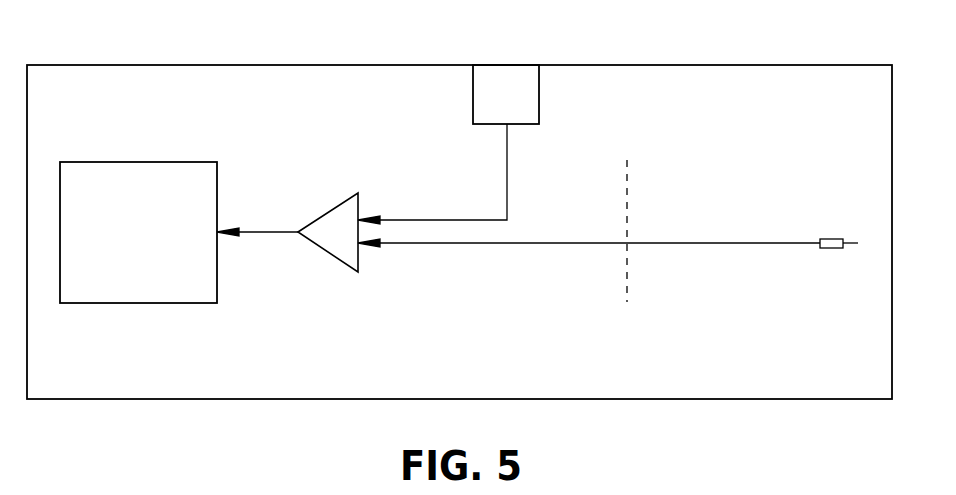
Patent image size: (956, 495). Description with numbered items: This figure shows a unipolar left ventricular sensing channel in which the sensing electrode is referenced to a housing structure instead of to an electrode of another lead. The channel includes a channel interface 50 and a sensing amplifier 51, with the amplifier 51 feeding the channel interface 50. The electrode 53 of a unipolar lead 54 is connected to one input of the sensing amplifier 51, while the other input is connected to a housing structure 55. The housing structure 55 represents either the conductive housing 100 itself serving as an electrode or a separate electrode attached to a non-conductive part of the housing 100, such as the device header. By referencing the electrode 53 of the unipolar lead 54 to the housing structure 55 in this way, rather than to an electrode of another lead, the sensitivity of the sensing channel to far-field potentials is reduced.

The conductive housing 100 is at (679, 65).
The channel interface 50 is at (137, 161).
The sensing amplifier 51 is at (352, 242).
The electrode 53 is at (829, 239).
The unipolar lead 54 is at (680, 272).
The housing structure 55 is at (520, 108).